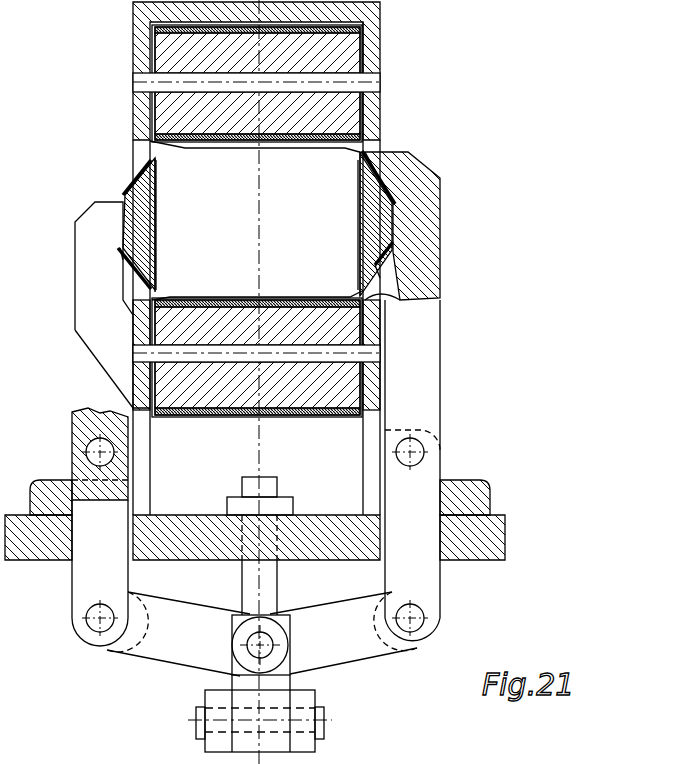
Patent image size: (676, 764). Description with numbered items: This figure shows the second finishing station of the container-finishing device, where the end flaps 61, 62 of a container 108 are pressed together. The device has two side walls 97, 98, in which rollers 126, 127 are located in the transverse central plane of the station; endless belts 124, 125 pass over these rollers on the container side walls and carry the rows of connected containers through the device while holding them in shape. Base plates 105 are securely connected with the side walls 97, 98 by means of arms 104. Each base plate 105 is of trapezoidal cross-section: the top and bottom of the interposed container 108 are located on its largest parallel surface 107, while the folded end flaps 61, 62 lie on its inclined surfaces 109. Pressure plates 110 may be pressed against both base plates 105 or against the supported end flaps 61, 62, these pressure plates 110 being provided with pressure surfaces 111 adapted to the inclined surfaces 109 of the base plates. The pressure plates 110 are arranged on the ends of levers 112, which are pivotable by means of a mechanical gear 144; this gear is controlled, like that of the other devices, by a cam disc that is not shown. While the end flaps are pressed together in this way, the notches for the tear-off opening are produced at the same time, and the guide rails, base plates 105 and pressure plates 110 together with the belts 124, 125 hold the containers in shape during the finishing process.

The side wall 97 is at (133, 42).
The side wall 98 is at (379, 32).
The roller 126 is at (347, 52).
The endless belt 124 is at (360, 127).
The container 108 is at (317, 180).
The base plate 105 is at (145, 212).
The largest parallel surface 107 is at (158, 226).
The end flap 61 is at (135, 190).
The inclined surface 109 is at (145, 184).
The pressure surface 111 is at (395, 190).
The pressure plate 110 is at (440, 198).
The end flap 62 is at (125, 262).
The arm 104 is at (85, 247).
The roller 127 is at (206, 400).
The endless belt 125 is at (329, 410).
The lever 112 is at (432, 370).
The mechanical gear 144 is at (313, 697).